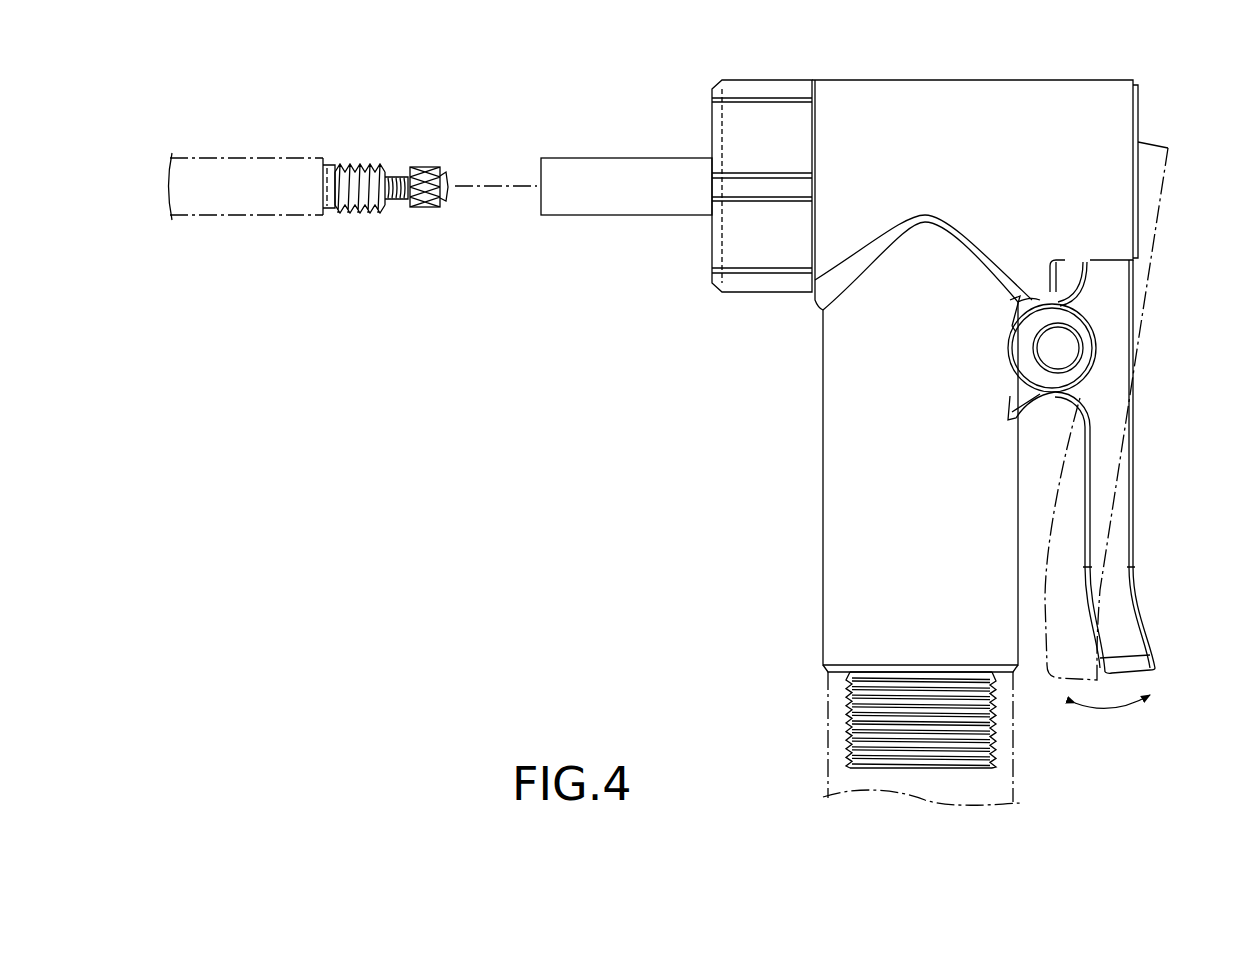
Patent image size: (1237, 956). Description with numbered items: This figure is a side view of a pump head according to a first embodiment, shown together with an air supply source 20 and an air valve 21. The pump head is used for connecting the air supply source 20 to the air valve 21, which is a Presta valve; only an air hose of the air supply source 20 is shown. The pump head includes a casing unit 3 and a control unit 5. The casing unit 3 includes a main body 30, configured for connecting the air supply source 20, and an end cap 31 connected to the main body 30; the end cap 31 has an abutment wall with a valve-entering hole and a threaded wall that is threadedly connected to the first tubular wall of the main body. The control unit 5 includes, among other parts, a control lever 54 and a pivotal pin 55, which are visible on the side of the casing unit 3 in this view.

The casing unit 3 is at (822, 488).
The control unit 5 is at (1168, 426).
The air supply source 20 is at (838, 770).
The air valve 21 is at (263, 163).
The main body 30 is at (1000, 128).
The end cap 31 is at (765, 116).
The control lever 54 is at (1125, 612).
The pivotal pin 55 is at (1058, 348).